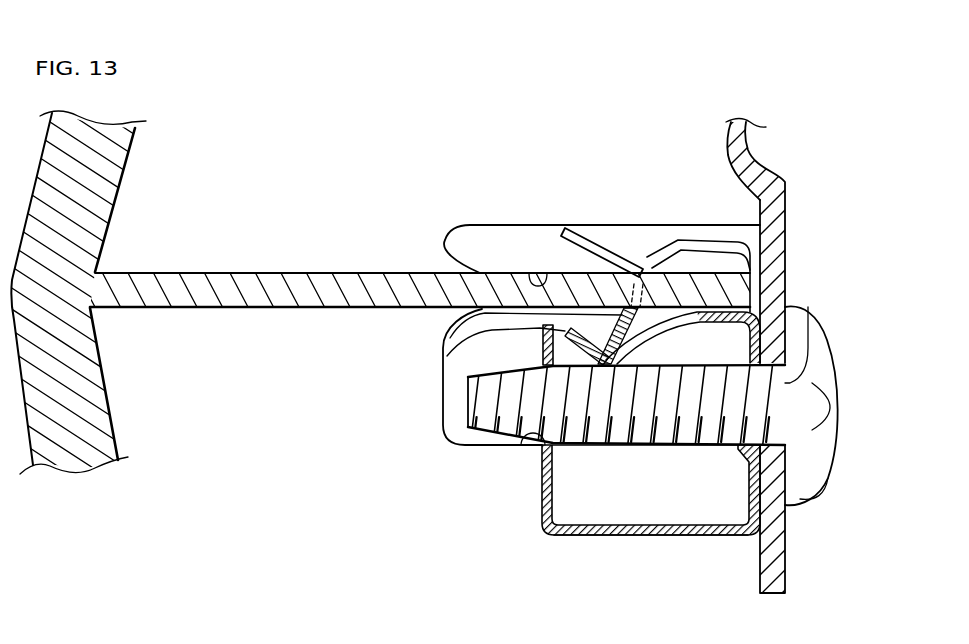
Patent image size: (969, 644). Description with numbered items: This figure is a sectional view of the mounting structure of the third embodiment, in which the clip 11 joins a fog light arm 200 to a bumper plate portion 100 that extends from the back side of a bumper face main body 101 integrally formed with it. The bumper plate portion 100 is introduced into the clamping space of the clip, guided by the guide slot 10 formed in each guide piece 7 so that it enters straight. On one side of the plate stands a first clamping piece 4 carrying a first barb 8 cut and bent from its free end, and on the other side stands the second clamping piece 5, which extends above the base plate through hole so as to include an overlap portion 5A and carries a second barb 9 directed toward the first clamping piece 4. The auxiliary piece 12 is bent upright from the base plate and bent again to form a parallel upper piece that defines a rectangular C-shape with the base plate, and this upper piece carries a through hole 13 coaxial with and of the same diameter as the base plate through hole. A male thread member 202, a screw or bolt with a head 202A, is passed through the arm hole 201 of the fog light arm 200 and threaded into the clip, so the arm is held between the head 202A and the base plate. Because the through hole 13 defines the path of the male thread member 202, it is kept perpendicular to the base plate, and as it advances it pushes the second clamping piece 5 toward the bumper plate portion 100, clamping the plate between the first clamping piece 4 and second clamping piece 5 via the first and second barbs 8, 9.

The first clamping piece 4 is at (683, 242).
The second clamping piece 5 is at (576, 462).
The overlap portion 5A is at (600, 447).
The guide piece 7 is at (472, 234).
The first barb 8 is at (627, 268).
The second barb 9 is at (474, 320).
The guide slot 10 is at (531, 273).
The clip assembly 11 is at (509, 148).
The auxiliary piece 12 is at (562, 534).
The through hole 13 is at (530, 428).
The bumper plate portion 100 is at (258, 273).
The bumper face main body 101 is at (103, 176).
The fog light arm 200 is at (727, 140).
The arm hole 201 is at (808, 347).
The male thread member 202 is at (687, 435).
The head 202A is at (803, 493).